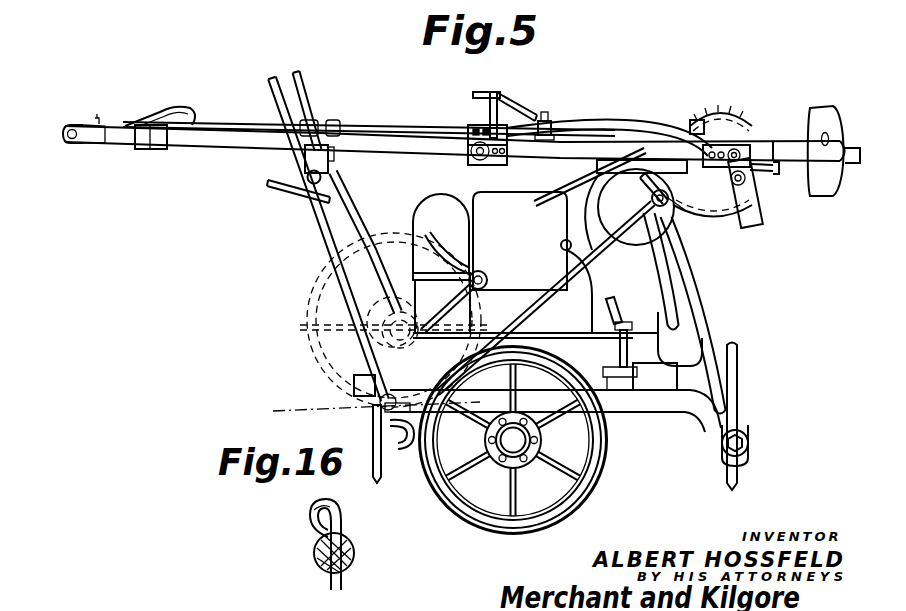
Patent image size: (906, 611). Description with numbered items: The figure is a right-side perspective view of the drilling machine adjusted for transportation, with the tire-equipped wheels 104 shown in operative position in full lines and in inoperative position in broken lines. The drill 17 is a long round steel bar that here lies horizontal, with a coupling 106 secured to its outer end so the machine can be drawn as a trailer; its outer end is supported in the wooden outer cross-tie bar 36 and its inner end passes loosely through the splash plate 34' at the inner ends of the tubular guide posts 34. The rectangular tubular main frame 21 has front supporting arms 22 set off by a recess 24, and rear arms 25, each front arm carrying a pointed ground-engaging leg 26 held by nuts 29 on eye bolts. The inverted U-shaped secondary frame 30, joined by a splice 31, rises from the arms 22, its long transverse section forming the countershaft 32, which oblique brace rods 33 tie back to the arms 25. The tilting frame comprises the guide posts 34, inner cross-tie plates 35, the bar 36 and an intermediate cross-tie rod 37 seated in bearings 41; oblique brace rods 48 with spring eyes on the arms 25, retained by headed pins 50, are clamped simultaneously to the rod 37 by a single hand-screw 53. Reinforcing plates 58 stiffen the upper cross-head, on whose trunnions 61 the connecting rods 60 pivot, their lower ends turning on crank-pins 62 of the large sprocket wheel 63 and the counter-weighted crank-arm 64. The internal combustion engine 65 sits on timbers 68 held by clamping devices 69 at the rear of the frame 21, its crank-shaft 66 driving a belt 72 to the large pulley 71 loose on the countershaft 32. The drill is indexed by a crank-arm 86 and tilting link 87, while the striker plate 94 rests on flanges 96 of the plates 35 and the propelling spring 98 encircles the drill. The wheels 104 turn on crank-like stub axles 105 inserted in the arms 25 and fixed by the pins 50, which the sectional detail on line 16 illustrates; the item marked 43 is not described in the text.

In FIG. 5, the axle 16 is at (391, 398).
In FIG. 5, the drill 17 is at (352, 126).
In FIG. 5, the main frame 21 is at (643, 352).
In FIG. 5, the supporting arms 22 is at (680, 370).
In FIG. 16, the supporting arms 22 is at (348, 545).
In FIG. 5, the recess 24 is at (655, 376).
In FIG. 5, the arms 25 is at (373, 411).
In FIG. 5, the ground-engaging leg 26 is at (738, 466).
In FIG. 5, the nuts 29 is at (749, 440).
In FIG. 5, the secondary frame 30 is at (664, 290).
In FIG. 5, the splice 31 is at (700, 218).
In FIG. 5, the countershaft 32 is at (672, 201).
In FIG. 5, the oblique brace rods 33 is at (550, 292).
In FIG. 5, the guide posts 34 is at (462, 146).
In FIG. 5, the splash plate 34' is at (821, 132).
In FIG. 5, the inner cross-tie plates 35 is at (755, 185).
In FIG. 5, the outer cross-tie bar 36 is at (150, 150).
In FIG. 5, the intermediate cross-tie rod 37 is at (323, 180).
In FIG. 5, the bearings 41 is at (304, 158).
In FIG. 5, the lever 43 is at (643, 163).
In FIG. 5, the oblique brace rods 48 is at (270, 77).
In FIG. 5, the removable headed pins 50 is at (417, 357).
In FIG. 16, the removable headed pins 50 is at (312, 512).
In FIG. 5, the hand-screw 53 is at (290, 190).
In FIG. 5, the metal reinforcing plates 58 is at (468, 134).
In FIG. 5, the connecting rods 60 is at (580, 125).
In FIG. 5, the trunnions 61 is at (468, 158).
In FIG. 5, the crank-pins 62 is at (728, 168).
In FIG. 5, the sprocket wheel 63 is at (700, 120).
In FIG. 5, the counter-weighted crank-arm 64 is at (752, 228).
In FIG. 5, the internal combustion engine 65 is at (492, 201).
In FIG. 5, the crank-shaft 66 is at (488, 281).
In FIG. 5, the timbers 68 is at (609, 356).
In FIG. 5, the clamping devices 69 is at (607, 316).
In FIG. 5, the pulley 71 is at (597, 180).
In FIG. 5, the belt 72 is at (572, 186).
In FIG. 5, the crank-arm 86 is at (489, 106).
In FIG. 5, the tilting link 87 is at (522, 103).
In FIG. 5, the striker plate 94 is at (692, 124).
In FIG. 5, the outturned flanges 96 is at (745, 122).
In FIG. 5, the compression propelling spring 98 is at (548, 111).
In FIG. 5, the wheels 104 is at (312, 300).
In FIG. 5, the stub axle 105 is at (405, 451).
In FIG. 16, the stub axle 105 is at (352, 566).
In FIG. 5, the coupling 106 is at (88, 139).